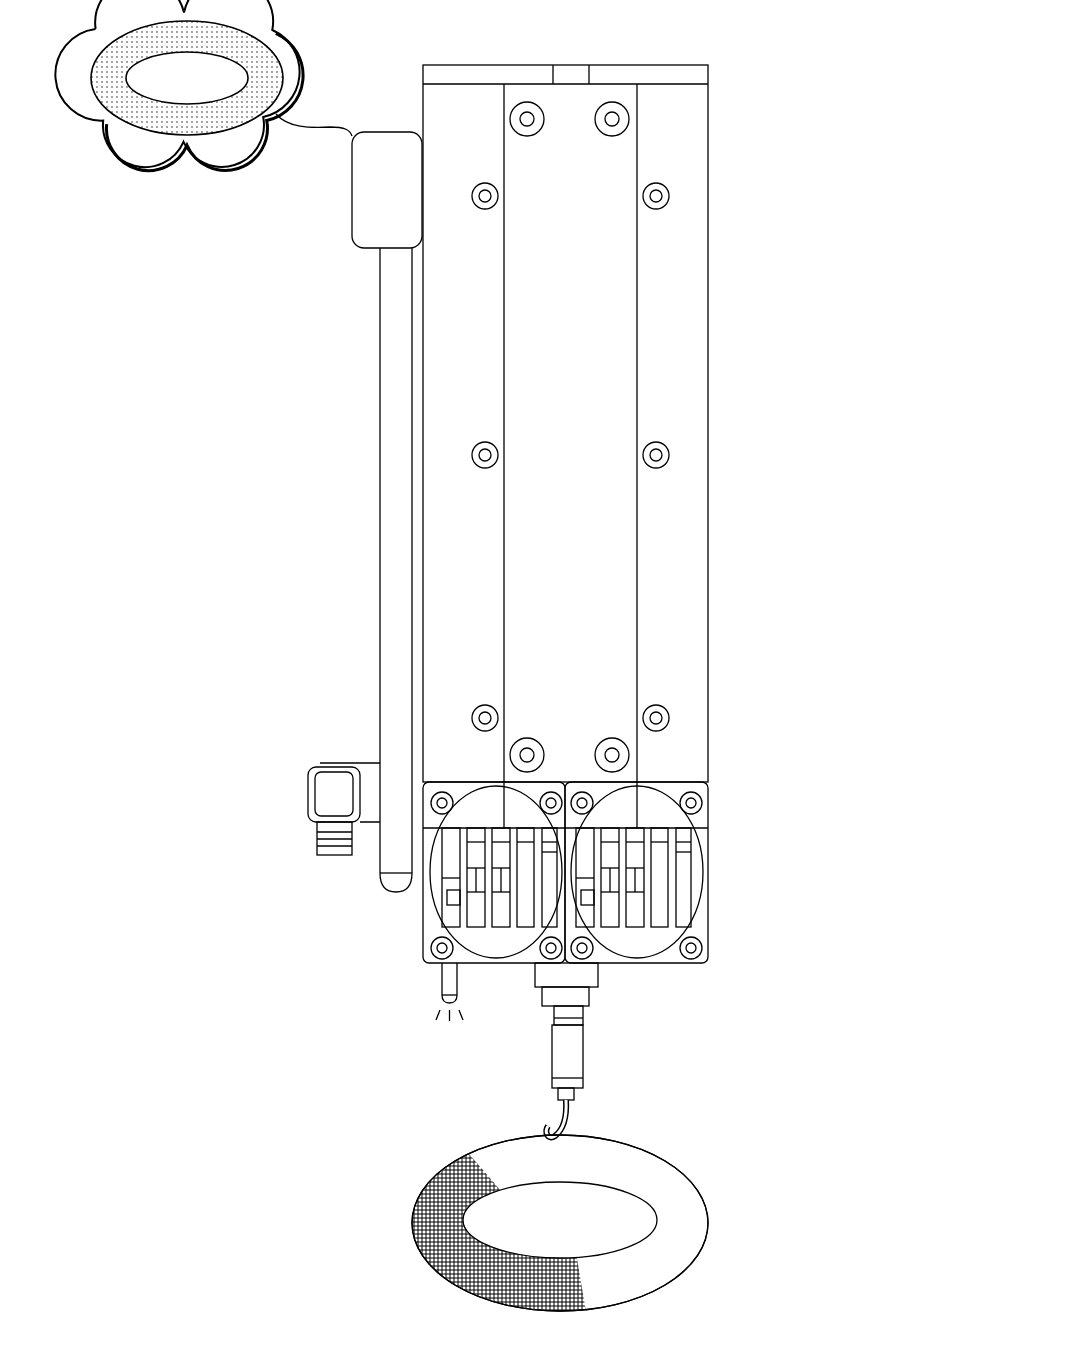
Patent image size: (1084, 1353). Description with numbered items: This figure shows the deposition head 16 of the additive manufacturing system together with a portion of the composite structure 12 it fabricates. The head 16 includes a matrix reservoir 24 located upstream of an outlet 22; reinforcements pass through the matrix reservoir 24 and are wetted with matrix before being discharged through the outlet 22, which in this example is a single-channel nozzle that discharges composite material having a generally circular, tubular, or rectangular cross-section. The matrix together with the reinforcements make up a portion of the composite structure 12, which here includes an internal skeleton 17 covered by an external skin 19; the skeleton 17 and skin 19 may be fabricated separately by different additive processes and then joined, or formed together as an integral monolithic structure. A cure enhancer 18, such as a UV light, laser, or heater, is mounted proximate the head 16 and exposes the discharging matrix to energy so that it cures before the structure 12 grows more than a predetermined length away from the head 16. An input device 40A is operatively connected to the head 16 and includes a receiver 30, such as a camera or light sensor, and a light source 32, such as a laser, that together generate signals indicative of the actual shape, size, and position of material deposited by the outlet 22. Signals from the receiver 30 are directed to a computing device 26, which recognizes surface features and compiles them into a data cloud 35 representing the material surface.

The data cloud 35 is at (175, 92).
The computing device 26 is at (376, 205).
The matrix reservoir 24 is at (565, 514).
The deposition head 16 is at (146, 808).
The input device 40A is at (259, 805).
The receiver 30 is at (317, 832).
The light source 32 is at (382, 892).
The cure enhancer 18 is at (437, 976).
The outlet 22 is at (577, 1073).
The composite structure 12 is at (548, 1234).
The external skin 19 is at (683, 1190).
The internal skeleton 17 is at (421, 1247).